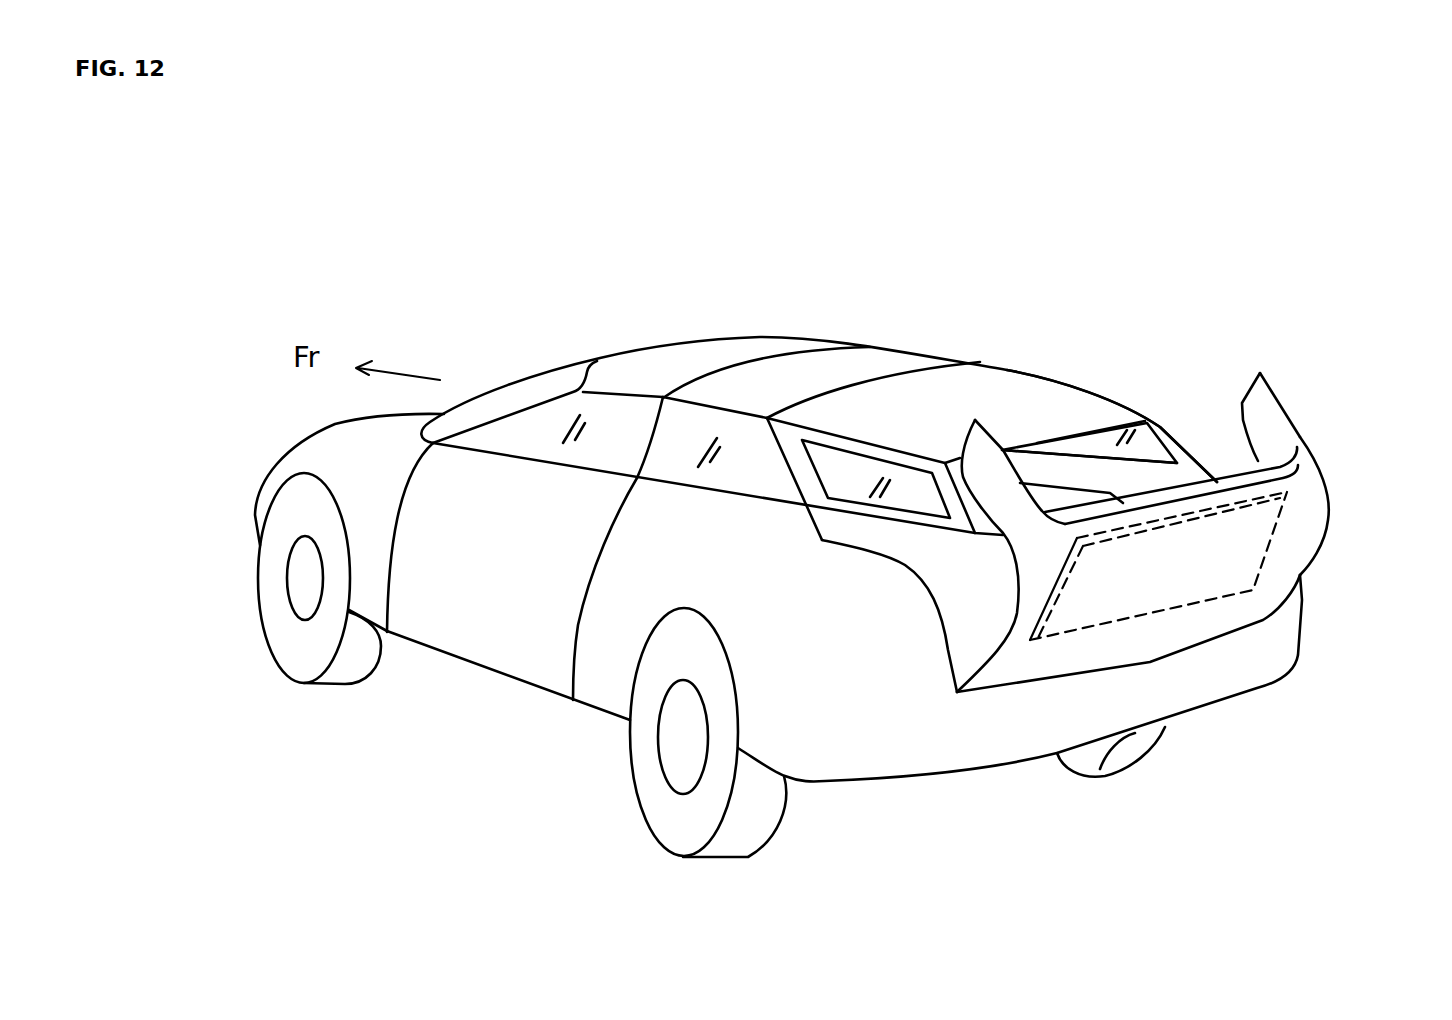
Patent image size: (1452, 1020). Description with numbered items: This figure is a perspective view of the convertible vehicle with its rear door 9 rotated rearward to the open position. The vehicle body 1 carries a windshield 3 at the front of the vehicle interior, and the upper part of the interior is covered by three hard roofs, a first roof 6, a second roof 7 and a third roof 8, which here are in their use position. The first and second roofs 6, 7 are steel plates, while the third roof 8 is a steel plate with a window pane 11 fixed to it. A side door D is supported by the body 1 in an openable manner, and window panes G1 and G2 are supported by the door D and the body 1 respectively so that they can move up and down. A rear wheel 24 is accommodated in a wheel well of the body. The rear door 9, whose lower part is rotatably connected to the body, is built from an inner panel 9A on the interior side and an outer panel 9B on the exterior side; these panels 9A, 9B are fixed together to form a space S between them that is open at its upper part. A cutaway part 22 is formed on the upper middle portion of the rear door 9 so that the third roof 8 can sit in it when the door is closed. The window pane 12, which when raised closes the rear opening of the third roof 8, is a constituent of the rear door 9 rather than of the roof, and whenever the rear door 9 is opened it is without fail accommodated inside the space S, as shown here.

The vehicle body 1 is at (1326, 651).
The windshield 3 is at (538, 385).
The first roof 6 is at (698, 354).
The second roof 7 is at (872, 363).
The third roof 8 is at (1007, 387).
The rear door 9 is at (1328, 475).
The inner panel 9A is at (1170, 493).
The outer panel 9B is at (1308, 507).
The window pane 11 is at (865, 472).
The window pane 12 is at (1285, 527).
The cutaway part 22 is at (1283, 413).
The rear wheel 24 is at (780, 805).
The window pane G1 is at (533, 443).
The window pane G2 is at (726, 476).
The side door D is at (502, 648).
The space S is at (1247, 483).